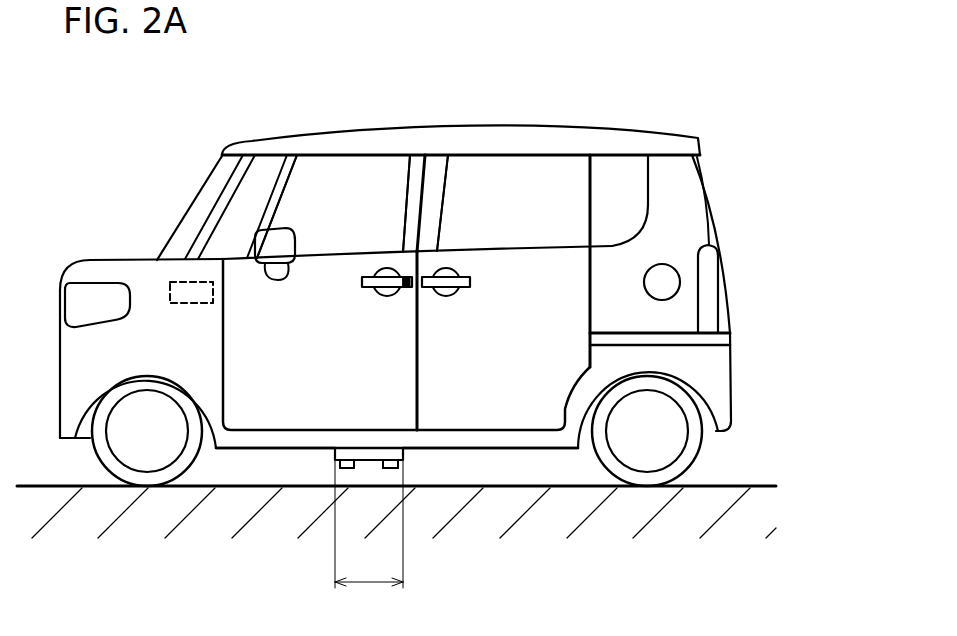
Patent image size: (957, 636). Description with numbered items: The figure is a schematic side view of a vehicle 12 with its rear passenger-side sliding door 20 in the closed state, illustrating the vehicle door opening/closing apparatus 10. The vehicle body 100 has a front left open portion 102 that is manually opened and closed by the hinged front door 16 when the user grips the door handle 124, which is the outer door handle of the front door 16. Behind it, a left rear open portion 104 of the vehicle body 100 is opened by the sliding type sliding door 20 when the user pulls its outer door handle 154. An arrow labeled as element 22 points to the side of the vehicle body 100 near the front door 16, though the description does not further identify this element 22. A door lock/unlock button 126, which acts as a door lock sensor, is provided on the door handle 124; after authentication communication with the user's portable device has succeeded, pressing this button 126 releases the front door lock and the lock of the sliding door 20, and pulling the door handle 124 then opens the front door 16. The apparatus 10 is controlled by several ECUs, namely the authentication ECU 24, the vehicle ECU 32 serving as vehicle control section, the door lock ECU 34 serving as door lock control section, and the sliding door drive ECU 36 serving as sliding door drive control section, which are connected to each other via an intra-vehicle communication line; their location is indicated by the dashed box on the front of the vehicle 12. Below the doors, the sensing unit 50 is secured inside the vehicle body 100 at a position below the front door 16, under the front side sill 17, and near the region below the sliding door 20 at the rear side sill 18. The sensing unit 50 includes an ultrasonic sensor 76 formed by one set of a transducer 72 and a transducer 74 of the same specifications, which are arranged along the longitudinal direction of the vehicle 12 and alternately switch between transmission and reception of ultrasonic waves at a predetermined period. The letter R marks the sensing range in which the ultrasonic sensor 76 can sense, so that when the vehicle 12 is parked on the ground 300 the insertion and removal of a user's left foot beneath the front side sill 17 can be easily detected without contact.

The vehicle 12 is at (540, 78).
The vehicle side surface 22 is at (361, 181).
The vehicle body 100 is at (407, 128).
The front left open portion 102 is at (317, 183).
The left rear open portion 104 is at (490, 183).
The authentication ECU 24 is at (168, 292).
The vehicle ECU 32 is at (191, 292).
The door lock ECU 34 is at (191, 292).
The sliding door drive ECU 36 is at (191, 292).
The front door 16 is at (243, 335).
The front side sill 17 is at (271, 440).
The rear side sill 18 is at (474, 440).
The sliding door 20 is at (568, 313).
The door handle 124 is at (386, 271).
The door lock/unlock button 126 is at (407, 293).
The outer door handle 154 is at (470, 282).
The sensing unit 50 is at (395, 453).
The ultrasonic sensor 76 is at (400, 377).
The transducer 72 is at (349, 458).
The transducer 74 is at (389, 458).
The vehicle door opening/closing apparatus 10 is at (367, 467).
The ground 300 is at (738, 485).